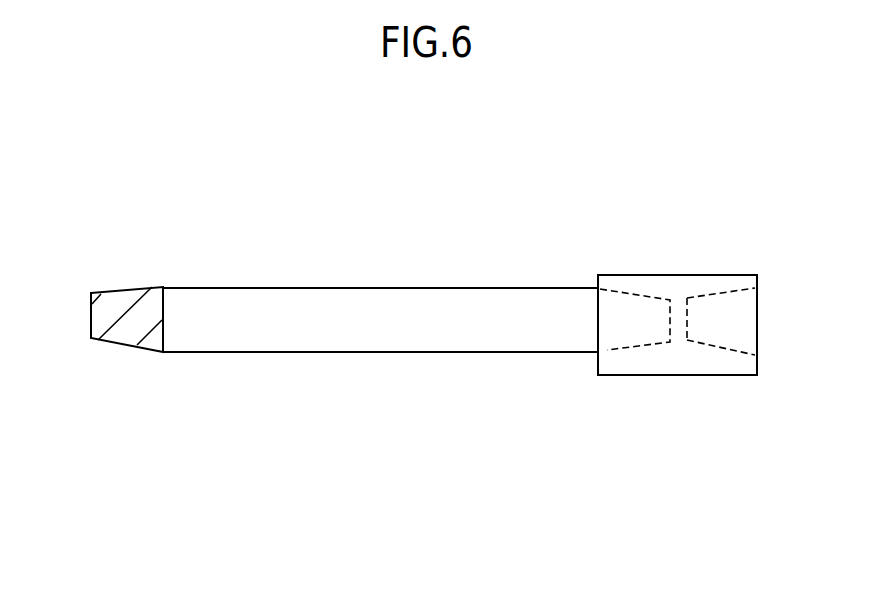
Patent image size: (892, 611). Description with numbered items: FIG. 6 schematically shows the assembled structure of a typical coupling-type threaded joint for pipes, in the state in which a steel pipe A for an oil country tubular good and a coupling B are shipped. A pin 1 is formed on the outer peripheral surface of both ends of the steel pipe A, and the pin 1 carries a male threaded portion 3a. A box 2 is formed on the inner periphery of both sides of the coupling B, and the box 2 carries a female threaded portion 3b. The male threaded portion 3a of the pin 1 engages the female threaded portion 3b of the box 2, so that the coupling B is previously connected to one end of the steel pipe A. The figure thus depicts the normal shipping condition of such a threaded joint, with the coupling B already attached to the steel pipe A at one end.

The pin 1 is at (139, 279).
The box 2 is at (641, 259).
The male threaded portion 3a is at (112, 297).
The female threaded portion 3b is at (637, 347).
The steel pipe A is at (381, 249).
The coupling B is at (677, 226).